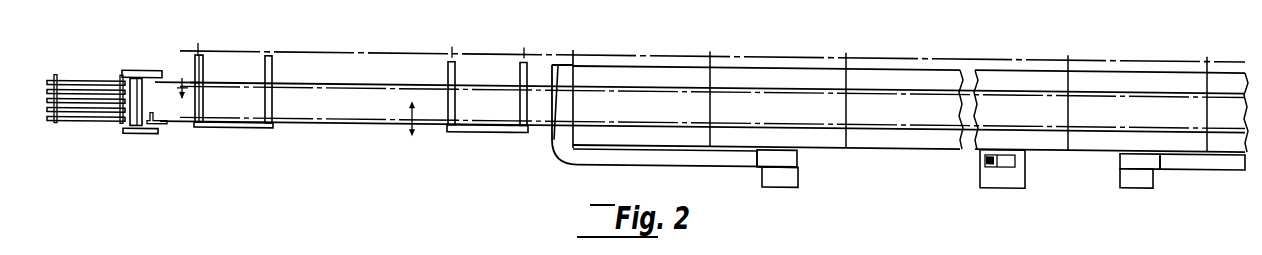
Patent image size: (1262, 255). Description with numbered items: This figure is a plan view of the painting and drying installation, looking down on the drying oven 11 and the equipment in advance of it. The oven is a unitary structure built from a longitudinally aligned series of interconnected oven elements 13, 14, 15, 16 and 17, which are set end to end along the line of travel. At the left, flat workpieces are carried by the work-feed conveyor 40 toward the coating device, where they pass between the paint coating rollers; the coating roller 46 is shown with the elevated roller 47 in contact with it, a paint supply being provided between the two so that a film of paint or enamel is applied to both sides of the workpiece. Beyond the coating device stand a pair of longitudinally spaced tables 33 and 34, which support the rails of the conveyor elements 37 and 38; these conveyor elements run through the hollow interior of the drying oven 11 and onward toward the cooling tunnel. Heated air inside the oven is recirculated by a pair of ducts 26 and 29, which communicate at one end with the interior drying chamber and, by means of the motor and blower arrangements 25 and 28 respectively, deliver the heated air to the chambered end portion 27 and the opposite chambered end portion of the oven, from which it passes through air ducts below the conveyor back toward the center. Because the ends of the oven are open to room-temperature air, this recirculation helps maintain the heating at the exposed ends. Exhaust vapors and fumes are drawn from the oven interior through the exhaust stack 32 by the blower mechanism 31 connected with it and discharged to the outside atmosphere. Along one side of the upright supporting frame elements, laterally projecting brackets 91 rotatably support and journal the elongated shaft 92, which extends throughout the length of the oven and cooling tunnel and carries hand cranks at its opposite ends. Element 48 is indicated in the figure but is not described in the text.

The drying oven 11 is at (802, 31).
The oven element 13 is at (107, 131).
The oven element 14 is at (758, 64).
The oven element 15 is at (895, 69).
The oven element 16 is at (1122, 65).
The oven element 17 is at (1225, 70).
The motor and blower arrangement 25 is at (780, 169).
The duct 26 is at (680, 158).
The chambered end portion 27 is at (557, 151).
The motor and blower arrangement 28 is at (1137, 170).
The duct 29 is at (1210, 157).
The blower mechanism 31 is at (997, 168).
The exhaust stack 32 is at (983, 157).
The table 33 is at (237, 126).
The table 34 is at (480, 128).
The conveyor element 37 is at (307, 120).
The conveyor element 38 is at (313, 77).
The work-feed conveyor 40 is at (83, 60).
The paint coating roller 46 is at (163, 79).
The elevated roller 47 is at (131, 69).
The pusher plate 48 is at (146, 69).
The bracket 91 is at (198, 48).
The shaft 92 is at (434, 47).